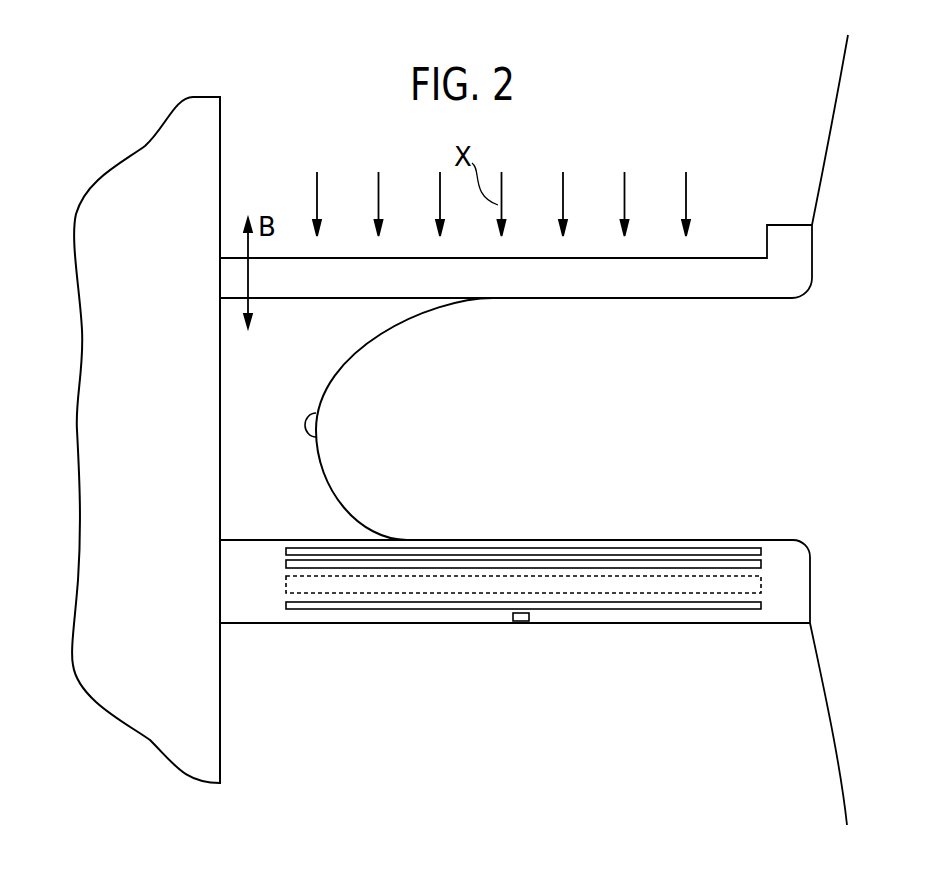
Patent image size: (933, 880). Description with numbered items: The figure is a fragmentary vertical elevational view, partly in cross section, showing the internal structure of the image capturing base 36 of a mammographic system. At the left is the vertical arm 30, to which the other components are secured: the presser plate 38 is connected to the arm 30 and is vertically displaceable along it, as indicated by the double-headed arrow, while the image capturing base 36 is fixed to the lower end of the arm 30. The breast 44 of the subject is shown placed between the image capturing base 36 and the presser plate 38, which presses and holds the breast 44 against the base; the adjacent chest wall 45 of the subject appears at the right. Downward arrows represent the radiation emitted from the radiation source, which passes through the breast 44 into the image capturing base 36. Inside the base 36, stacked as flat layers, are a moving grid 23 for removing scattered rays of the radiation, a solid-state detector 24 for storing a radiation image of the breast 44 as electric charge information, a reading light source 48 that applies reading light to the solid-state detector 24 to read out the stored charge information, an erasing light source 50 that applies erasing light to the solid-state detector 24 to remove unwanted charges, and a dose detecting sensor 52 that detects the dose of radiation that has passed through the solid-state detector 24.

The vertical arm 30 is at (93, 423).
The breast 44 is at (347, 385).
The presser plate 38 is at (780, 240).
The chest wall 45 is at (832, 137).
The image capturing base 36 is at (729, 648).
The moving grid 23 is at (540, 553).
The solid-state detector 24 is at (462, 566).
The reading light source 48 is at (576, 583).
The erasing light source 50 is at (448, 607).
The dose detecting sensor 52 is at (518, 625).